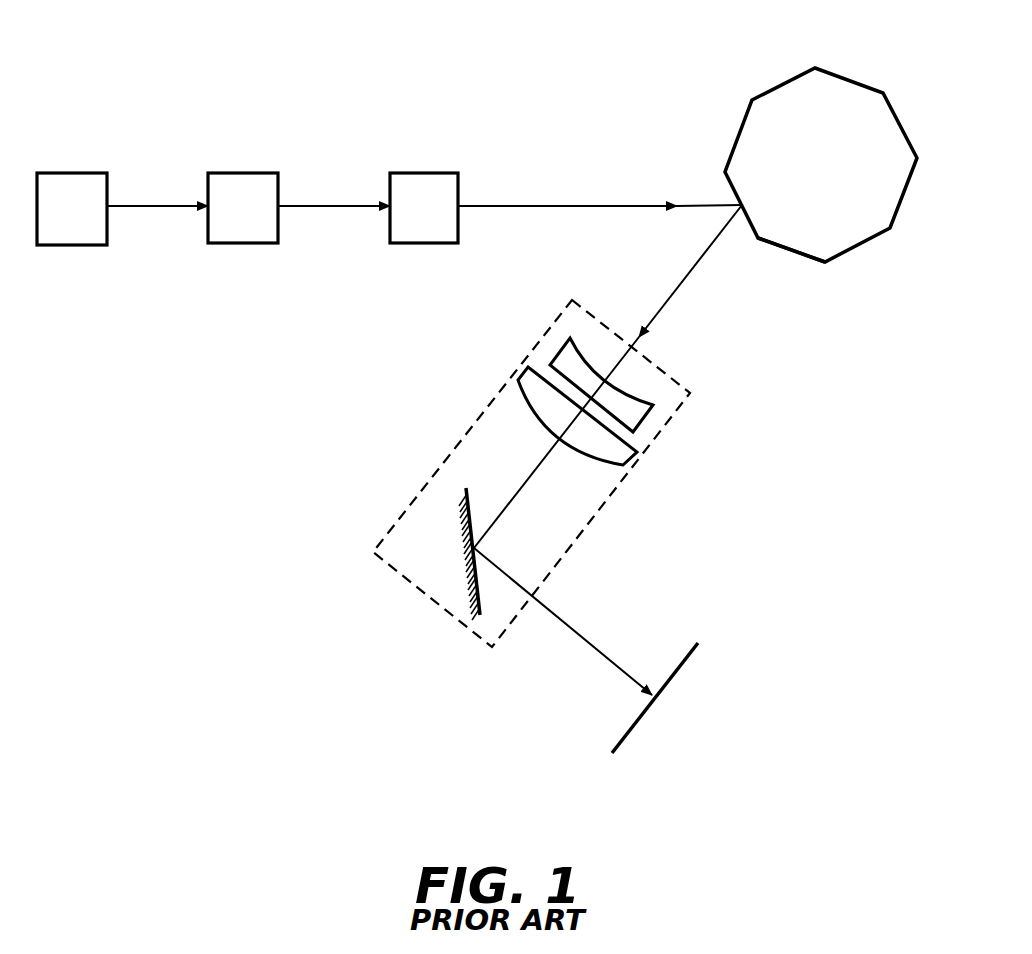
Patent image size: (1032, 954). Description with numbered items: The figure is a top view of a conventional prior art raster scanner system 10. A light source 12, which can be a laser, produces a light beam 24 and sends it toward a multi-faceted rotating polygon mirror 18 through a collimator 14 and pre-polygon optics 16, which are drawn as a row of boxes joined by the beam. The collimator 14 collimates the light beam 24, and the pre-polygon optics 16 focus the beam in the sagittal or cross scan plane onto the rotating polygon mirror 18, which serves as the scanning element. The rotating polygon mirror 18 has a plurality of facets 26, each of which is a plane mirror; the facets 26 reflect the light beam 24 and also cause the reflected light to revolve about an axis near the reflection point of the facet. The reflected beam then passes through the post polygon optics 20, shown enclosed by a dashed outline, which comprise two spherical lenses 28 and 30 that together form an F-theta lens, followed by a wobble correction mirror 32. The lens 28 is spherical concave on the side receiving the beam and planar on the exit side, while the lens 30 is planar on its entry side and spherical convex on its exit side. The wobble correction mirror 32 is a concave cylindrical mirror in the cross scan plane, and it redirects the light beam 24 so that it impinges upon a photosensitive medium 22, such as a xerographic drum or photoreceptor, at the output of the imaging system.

The raster scanner system 10 is at (374, 52).
The light source 12 is at (50, 173).
The collimator 14 is at (220, 173).
The pre-polygon optics 16 is at (405, 173).
The rotating polygon mirror 18 is at (835, 88).
The post polygon optics 20 is at (610, 500).
The photosensitive medium 22 is at (633, 727).
The light beam 24 is at (122, 207).
The facets 26 is at (793, 248).
The spherical lens 28 is at (562, 342).
The spherical lens 30 is at (533, 380).
The wobble correction mirror 32 is at (470, 588).